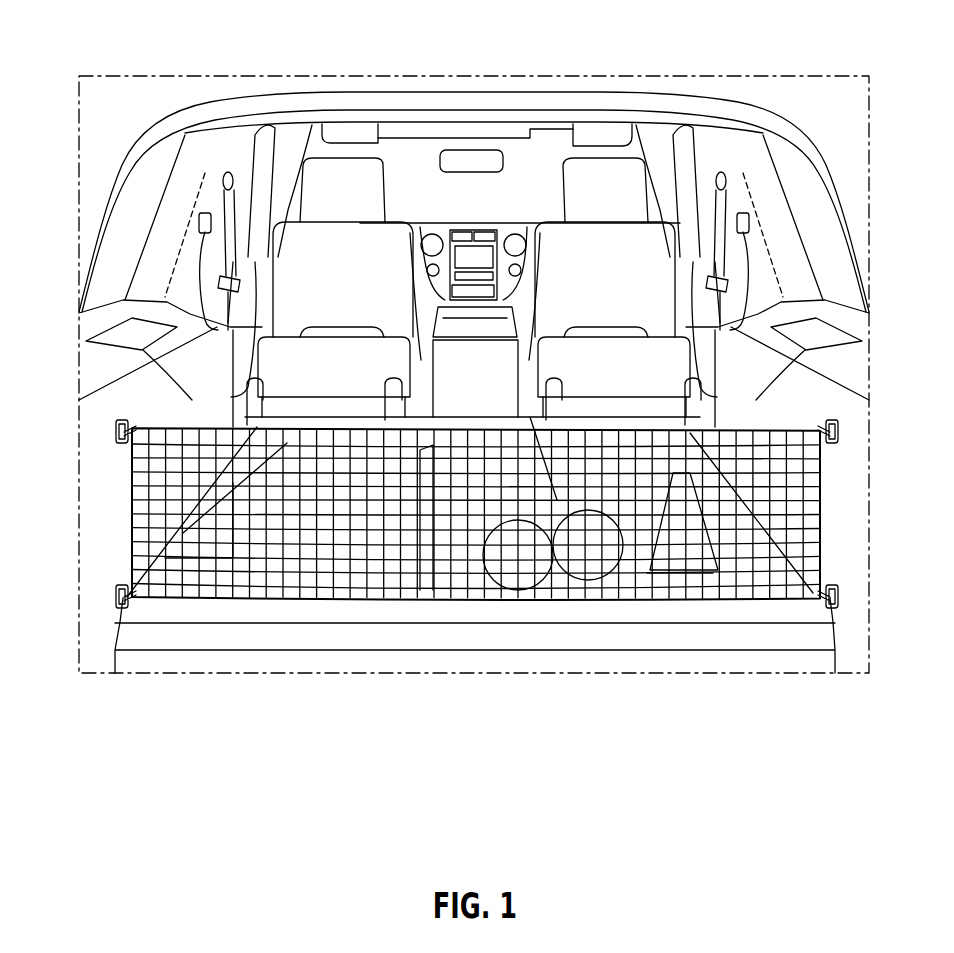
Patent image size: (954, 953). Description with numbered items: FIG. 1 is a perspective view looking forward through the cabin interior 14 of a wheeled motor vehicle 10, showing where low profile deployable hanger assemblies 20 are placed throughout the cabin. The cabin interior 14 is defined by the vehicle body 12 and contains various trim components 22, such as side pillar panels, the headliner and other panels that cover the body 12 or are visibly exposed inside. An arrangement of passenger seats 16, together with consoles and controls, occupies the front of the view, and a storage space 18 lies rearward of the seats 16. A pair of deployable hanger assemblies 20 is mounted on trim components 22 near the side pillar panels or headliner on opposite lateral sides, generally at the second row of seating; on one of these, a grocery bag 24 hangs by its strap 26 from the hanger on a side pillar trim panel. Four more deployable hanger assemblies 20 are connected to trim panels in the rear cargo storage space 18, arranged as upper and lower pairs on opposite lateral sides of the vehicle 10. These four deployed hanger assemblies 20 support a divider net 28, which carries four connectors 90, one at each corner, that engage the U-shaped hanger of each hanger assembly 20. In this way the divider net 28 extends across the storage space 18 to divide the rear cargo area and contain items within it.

The vehicle 10 is at (150, 110).
The vehicle body 12 is at (630, 92).
The cabin interior 14 is at (515, 170).
The passenger seats 16 is at (358, 355).
The storage space 18 is at (110, 323).
The deployable hanger assembly 20 is at (192, 207).
The trim components 22 is at (262, 148).
The grocery bag 24 is at (777, 279).
The strap 26 is at (757, 250).
The divider net 28 is at (773, 428).
The connectors 90 is at (127, 440).